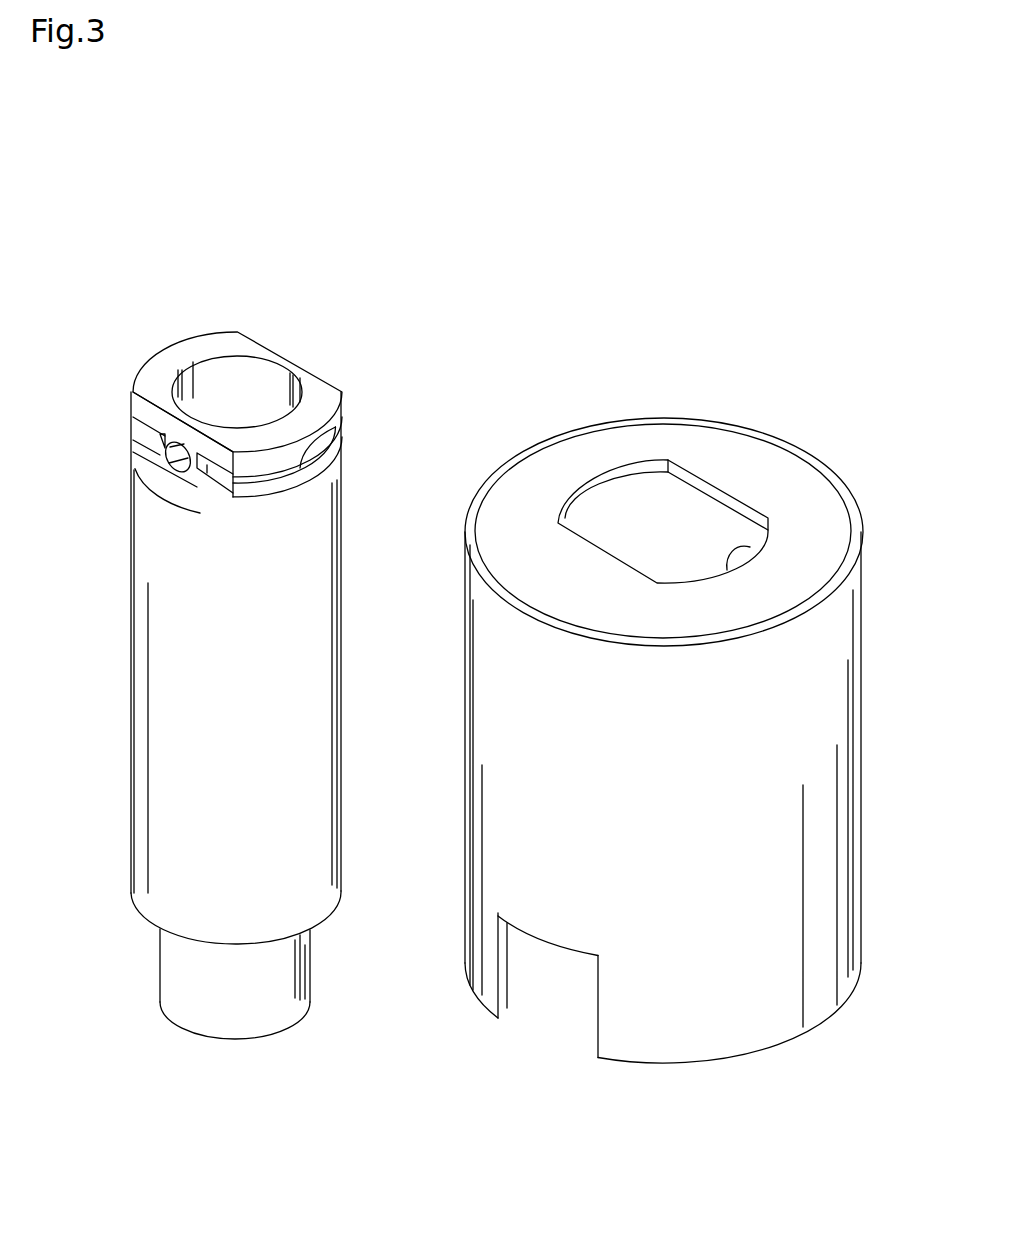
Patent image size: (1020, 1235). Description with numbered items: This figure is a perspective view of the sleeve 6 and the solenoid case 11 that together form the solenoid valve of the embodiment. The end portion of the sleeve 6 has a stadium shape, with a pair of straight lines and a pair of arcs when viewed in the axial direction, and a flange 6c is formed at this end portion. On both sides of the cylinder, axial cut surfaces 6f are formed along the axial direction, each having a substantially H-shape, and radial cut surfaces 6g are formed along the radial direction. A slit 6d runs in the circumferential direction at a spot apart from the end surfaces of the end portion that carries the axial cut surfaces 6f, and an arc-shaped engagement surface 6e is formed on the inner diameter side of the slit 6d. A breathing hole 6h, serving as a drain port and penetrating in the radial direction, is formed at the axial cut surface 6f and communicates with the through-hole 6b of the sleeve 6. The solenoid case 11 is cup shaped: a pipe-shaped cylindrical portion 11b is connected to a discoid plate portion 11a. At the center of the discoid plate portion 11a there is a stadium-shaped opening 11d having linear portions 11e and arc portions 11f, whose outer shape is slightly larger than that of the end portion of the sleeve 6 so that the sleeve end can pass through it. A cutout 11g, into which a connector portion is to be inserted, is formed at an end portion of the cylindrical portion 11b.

The sleeve 6 is at (228, 649).
The through-hole 6b is at (217, 383).
The flange 6c is at (342, 417).
The slit 6d is at (313, 463).
The engagement surface 6e is at (205, 472).
The axial cut surfaces 6f is at (152, 420).
The radial cut surfaces 6g is at (137, 470).
The breathing hole 6h is at (165, 455).
The solenoid case 11 is at (710, 733).
The discoid plate portion 11a is at (590, 447).
The cylindrical portion 11b is at (838, 763).
The opening 11d is at (645, 507).
The linear portions 11e is at (720, 497).
The arc portions 11f is at (750, 548).
The cutout 11g is at (597, 1023).